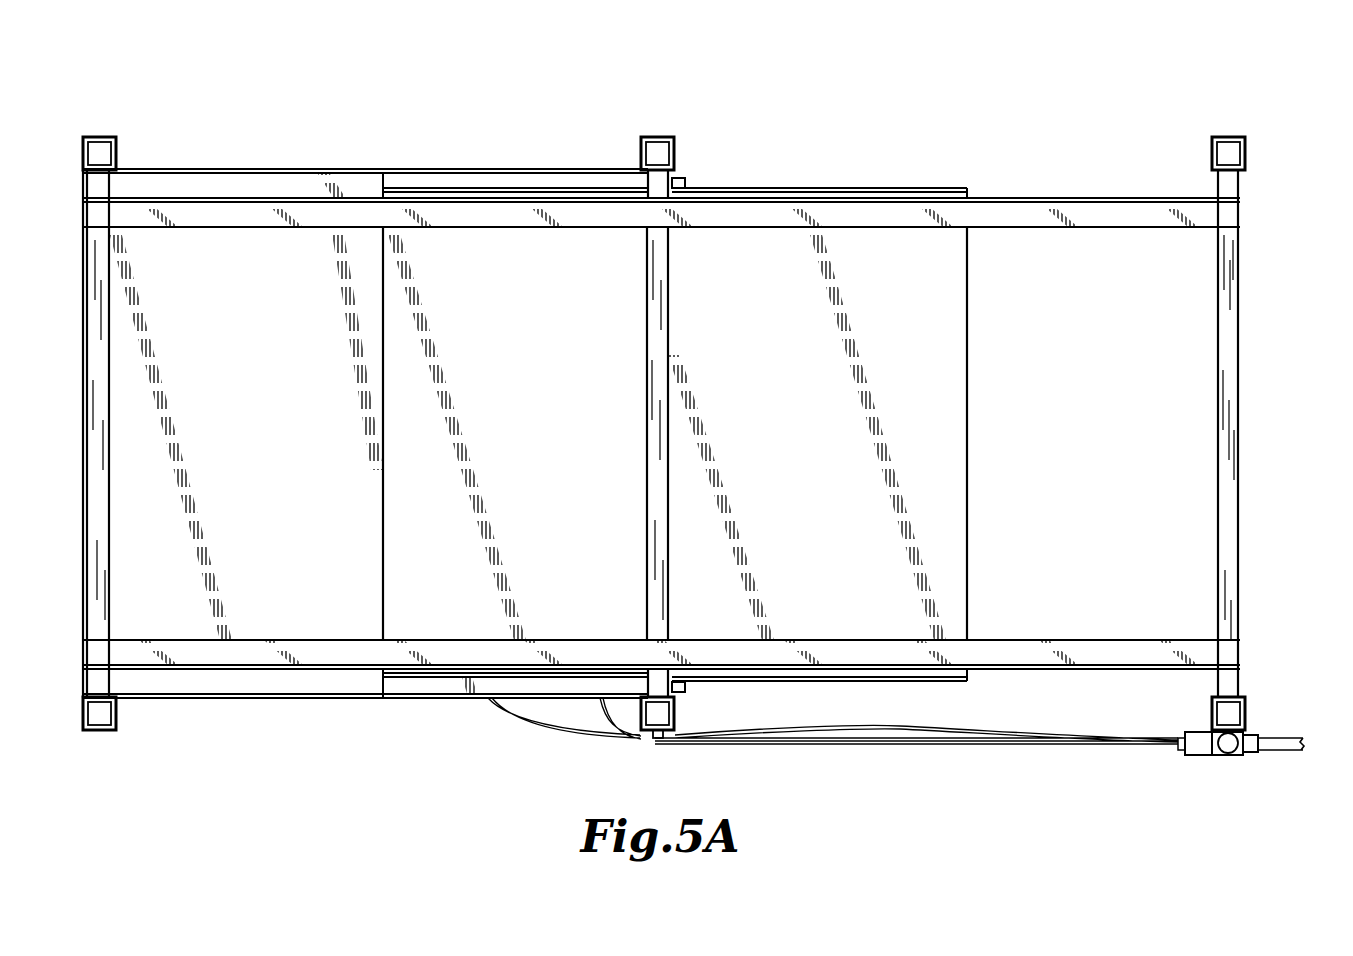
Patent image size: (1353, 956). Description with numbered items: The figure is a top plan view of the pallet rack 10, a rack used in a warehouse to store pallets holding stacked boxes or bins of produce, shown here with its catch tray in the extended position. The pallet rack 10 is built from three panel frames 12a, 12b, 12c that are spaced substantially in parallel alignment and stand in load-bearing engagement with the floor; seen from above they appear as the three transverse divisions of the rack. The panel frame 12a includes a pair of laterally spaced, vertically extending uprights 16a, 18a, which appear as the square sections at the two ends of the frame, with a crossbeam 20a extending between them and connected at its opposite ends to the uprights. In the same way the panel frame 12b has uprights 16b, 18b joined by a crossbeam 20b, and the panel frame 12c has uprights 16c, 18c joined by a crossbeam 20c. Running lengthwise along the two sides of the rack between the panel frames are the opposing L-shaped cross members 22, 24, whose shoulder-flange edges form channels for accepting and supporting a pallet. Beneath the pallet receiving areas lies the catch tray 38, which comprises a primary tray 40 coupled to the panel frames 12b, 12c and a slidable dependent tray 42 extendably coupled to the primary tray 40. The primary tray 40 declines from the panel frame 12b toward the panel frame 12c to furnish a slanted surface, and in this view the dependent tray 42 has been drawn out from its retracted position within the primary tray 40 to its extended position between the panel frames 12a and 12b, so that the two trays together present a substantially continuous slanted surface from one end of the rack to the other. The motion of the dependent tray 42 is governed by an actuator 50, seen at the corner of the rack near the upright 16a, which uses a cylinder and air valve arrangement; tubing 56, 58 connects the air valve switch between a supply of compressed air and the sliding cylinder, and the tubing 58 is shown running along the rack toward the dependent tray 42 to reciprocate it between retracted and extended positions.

The pallet rack 10 is at (1278, 196).
The panel frame 12a is at (1251, 715).
The panel frame 12b is at (681, 714).
The panel frame 12c is at (120, 716).
The upright 16a is at (1228, 755).
The upright 16b is at (662, 740).
The upright 16c is at (93, 733).
The upright 18a is at (1230, 137).
The upright 18b is at (657, 137).
The upright 18c is at (100, 137).
The crossbeam 20a is at (1218, 400).
The crossbeam 20b is at (663, 398).
The crossbeam 20c is at (233, 397).
The cross member 22 is at (1084, 640).
The cross member 24 is at (1107, 222).
The catch tray 38 is at (238, 252).
The primary tray 40 is at (321, 237).
The slidable dependent tray 42 is at (968, 455).
The actuator 50 is at (1194, 777).
The tubing 56 is at (1288, 755).
The tubing 58 is at (920, 732).